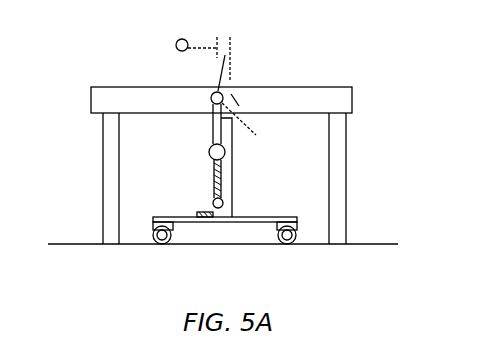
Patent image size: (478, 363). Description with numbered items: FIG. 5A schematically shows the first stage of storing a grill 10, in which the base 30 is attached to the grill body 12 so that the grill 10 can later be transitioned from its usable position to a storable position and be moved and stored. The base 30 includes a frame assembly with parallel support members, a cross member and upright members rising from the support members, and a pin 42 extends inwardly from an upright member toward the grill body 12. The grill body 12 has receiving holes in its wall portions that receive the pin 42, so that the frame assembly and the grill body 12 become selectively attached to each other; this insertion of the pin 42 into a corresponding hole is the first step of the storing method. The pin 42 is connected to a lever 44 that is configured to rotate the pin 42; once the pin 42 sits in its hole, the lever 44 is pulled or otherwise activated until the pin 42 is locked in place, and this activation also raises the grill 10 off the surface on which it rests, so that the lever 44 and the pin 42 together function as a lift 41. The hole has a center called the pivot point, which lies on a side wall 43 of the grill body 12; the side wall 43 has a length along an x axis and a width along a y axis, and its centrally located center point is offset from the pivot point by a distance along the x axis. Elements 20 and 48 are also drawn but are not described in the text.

The grill 10 is at (225, 143).
The grill body 12 is at (247, 91).
The support legs 20 is at (225, 178).
The base 30 is at (134, 84).
The lift 41 is at (256, 154).
The pin 42 is at (230, 58).
The side wall 43 is at (110, 102).
The lever 44 is at (186, 180).
The wheels 48 is at (225, 246).